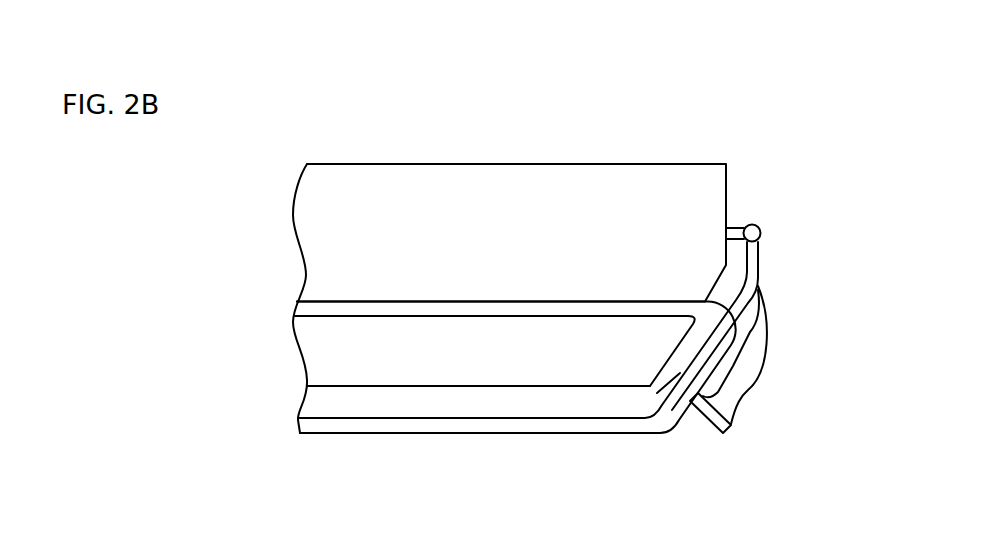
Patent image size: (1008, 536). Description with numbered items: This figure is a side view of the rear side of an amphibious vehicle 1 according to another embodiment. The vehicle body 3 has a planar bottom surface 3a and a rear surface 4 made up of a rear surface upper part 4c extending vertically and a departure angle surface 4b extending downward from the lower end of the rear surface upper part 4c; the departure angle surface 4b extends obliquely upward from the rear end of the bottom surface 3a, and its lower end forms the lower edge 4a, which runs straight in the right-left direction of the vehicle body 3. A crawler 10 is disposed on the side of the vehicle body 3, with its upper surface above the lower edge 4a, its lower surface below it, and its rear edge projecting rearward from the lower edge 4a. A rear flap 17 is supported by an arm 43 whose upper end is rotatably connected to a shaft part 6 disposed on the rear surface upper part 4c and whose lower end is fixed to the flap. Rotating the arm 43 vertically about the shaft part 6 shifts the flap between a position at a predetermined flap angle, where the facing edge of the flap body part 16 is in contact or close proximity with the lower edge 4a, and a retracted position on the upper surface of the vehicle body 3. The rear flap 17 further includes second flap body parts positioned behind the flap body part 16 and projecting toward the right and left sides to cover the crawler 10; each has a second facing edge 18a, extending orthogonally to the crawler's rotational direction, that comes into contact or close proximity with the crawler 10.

The amphibious vehicle 1 is at (697, 133).
The vehicle body 3 is at (410, 183).
The bottom surface 3a is at (413, 387).
The rear surface 4 is at (746, 173).
The lower edge 4a is at (652, 387).
The departure angle surface 4b is at (748, 282).
The rear surface upper part 4c is at (729, 220).
The shaft part 6 is at (762, 232).
The crawler 10 is at (490, 425).
The flap body part 16 is at (670, 379).
The rear flap 17 is at (704, 425).
The second facing edge 18a is at (727, 411).
The arm 43 is at (758, 284).